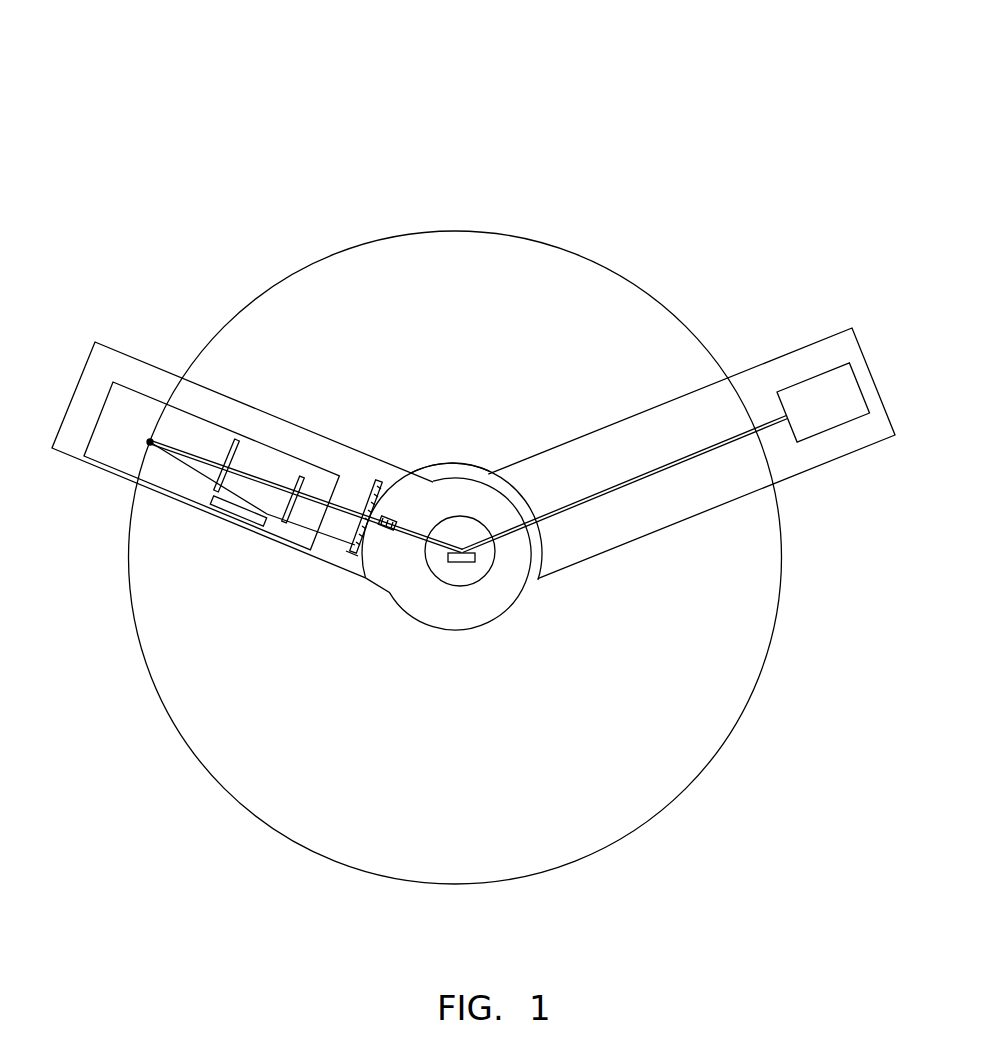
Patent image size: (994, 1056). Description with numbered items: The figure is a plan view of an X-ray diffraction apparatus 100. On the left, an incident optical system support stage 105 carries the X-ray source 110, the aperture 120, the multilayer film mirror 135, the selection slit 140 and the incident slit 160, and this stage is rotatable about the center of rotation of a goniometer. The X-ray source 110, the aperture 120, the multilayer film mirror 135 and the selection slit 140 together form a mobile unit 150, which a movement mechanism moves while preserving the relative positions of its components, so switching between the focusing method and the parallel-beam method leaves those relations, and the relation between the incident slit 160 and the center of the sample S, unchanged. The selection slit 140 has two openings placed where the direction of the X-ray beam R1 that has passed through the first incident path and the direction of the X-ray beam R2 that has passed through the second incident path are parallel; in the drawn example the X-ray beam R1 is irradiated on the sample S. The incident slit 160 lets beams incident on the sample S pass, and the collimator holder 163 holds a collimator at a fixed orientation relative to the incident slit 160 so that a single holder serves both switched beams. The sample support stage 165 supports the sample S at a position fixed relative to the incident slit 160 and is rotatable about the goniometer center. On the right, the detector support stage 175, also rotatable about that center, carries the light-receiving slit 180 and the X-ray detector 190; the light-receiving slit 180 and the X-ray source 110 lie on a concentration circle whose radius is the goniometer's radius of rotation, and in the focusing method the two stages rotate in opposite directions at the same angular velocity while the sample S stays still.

The X-ray diffraction apparatus 100 is at (442, 128).
The incident optical system support stage 105 is at (263, 533).
The X-ray source 110 is at (150, 440).
The aperture 120 is at (236, 440).
The multilayer film mirror 135 is at (222, 524).
The selection slit 140 is at (303, 476).
The mobile unit 150 is at (95, 453).
The incident slit 160 is at (380, 480).
The collimator holder 163 is at (361, 578).
The sample support stage 165 is at (462, 586).
The detector support stage 175 is at (603, 552).
The light-receiving slit 180 is at (757, 403).
The X-ray detector 190 is at (817, 377).
The X-ray beam having passed through the first incident path R1 is at (340, 510).
The X-ray beam having passed through the second incident path R2 is at (327, 537).
The sample S is at (470, 566).